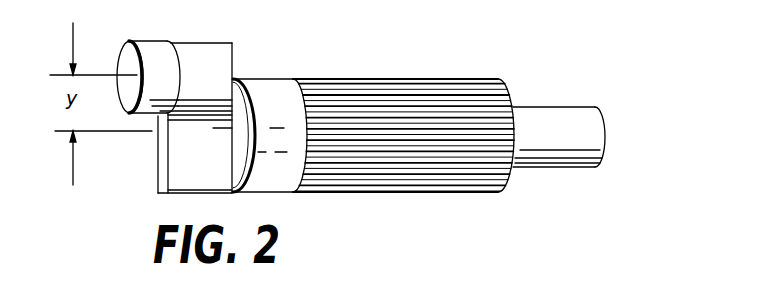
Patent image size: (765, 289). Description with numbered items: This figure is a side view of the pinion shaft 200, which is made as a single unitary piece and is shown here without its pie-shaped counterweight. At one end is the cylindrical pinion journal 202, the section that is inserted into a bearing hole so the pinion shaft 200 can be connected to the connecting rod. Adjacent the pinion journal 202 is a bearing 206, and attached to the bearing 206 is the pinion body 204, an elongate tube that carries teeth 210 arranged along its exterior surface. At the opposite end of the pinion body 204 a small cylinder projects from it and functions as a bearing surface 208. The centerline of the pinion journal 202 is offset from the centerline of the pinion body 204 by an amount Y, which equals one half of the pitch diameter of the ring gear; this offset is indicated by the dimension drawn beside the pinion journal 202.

The rotor assembly 200 is at (602, 77).
The disc 202 is at (152, 48).
The splined section 204 is at (428, 78).
The flange / smooth section 206 is at (267, 86).
The shaft 208 is at (540, 106).
The splines 210 is at (443, 158).